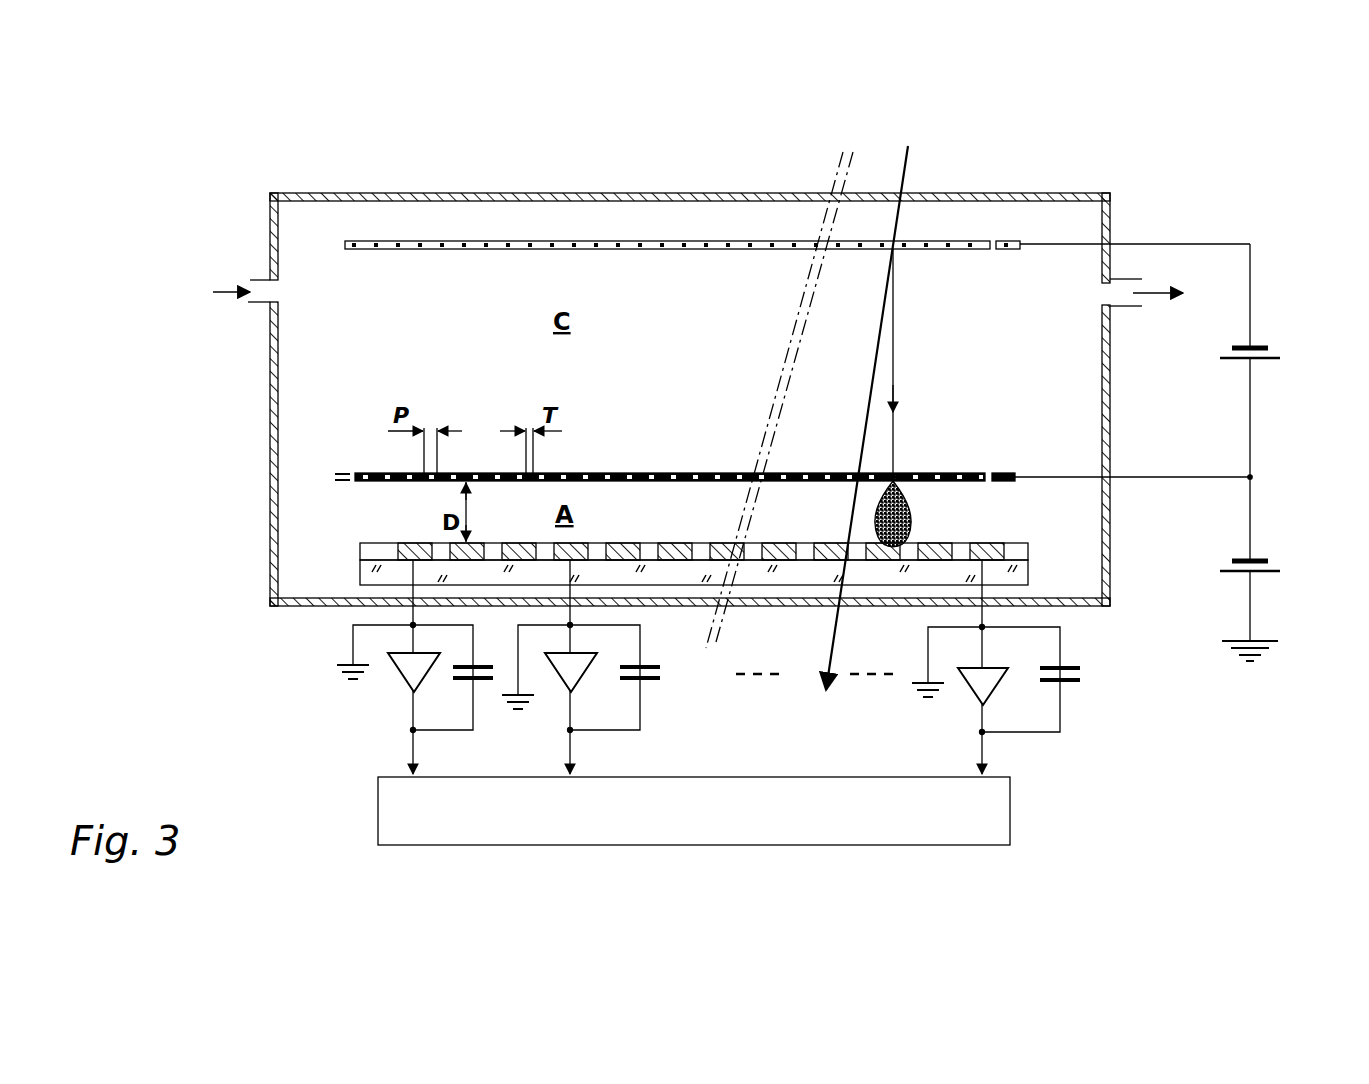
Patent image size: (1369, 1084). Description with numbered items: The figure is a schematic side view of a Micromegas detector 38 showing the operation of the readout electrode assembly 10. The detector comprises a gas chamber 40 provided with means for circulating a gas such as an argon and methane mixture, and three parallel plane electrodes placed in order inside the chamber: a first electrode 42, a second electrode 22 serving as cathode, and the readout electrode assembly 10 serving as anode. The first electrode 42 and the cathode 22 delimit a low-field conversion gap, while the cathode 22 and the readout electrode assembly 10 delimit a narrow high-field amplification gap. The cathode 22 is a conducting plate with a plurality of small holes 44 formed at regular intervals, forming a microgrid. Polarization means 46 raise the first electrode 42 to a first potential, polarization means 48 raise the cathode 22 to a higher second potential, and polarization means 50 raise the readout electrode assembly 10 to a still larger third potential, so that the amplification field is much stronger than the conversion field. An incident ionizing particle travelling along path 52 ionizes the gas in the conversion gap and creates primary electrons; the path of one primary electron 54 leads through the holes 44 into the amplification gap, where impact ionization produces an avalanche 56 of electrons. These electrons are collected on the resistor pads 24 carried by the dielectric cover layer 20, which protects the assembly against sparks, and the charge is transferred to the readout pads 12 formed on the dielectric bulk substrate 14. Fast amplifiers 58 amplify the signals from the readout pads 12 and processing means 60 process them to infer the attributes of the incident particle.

The readout electrode assembly 10 is at (405, 542).
The readout pads 12 is at (667, 548).
The bulk substrate 14 is at (1030, 568).
The dielectric cover layer 20 is at (1012, 545).
The second electrode 22 is at (703, 472).
The resistor pads 24 is at (578, 543).
The Micromegas detector 38 is at (242, 500).
The gas chamber 40 is at (503, 192).
The first electrode 42 is at (736, 250).
The holes 44 is at (612, 472).
The polarization means 46 is at (1293, 356).
The polarization means 48 is at (1293, 570).
The polarization means 50 is at (1090, 652).
The path of incident ionizing particle 52 is at (905, 175).
The path of primary electron 54 is at (897, 372).
The avalanche 56 is at (912, 520).
The fast amplifiers 58 is at (384, 726).
The processing means 60 is at (1010, 812).